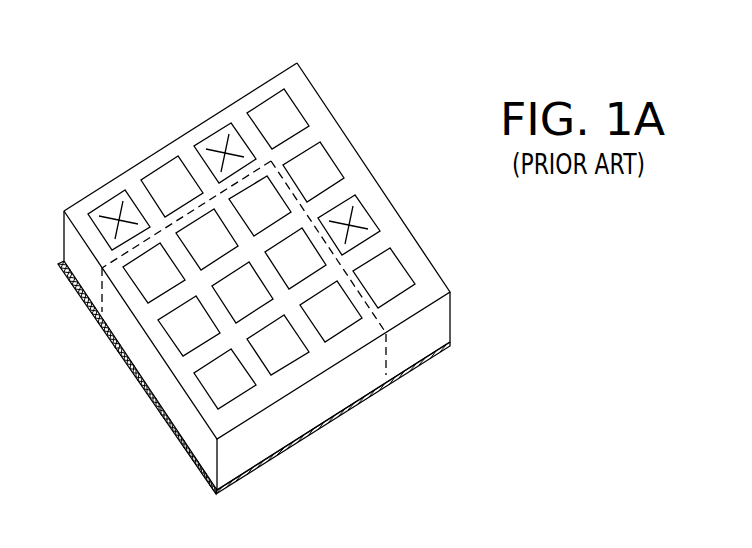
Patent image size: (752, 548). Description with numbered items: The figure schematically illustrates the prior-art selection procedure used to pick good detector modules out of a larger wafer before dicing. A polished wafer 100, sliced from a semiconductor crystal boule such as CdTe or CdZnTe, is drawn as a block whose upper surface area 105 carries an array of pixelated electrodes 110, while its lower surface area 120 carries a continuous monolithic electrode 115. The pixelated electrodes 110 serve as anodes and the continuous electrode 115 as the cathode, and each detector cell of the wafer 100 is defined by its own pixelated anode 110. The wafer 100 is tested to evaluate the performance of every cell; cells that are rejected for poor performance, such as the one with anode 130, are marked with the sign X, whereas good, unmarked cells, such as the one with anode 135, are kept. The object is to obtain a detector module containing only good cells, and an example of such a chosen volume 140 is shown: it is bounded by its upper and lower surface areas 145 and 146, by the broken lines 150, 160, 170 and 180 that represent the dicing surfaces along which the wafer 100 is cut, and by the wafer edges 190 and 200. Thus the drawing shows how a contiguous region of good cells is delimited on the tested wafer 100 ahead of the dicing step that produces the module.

The polished wafer 100 is at (448, 312).
The upper surface area 105 is at (285, 77).
The pixelated electrodes 110 is at (267, 110).
The continuous monolithic electrode 115 is at (452, 342).
The lower surface area 120 is at (427, 362).
The anode of rejected cell 130 is at (103, 208).
The anode of good cell 135 is at (180, 327).
The volume 140 is at (238, 410).
The upper surface area of the volume 145 is at (212, 197).
The lower surface area of the volume 146 is at (117, 343).
The broken line 150 is at (102, 288).
The broken line 160 is at (123, 173).
The broken line 170 is at (320, 203).
The broken line 180 is at (390, 356).
The wafer edge 190 is at (320, 408).
The wafer edge 200 is at (153, 393).